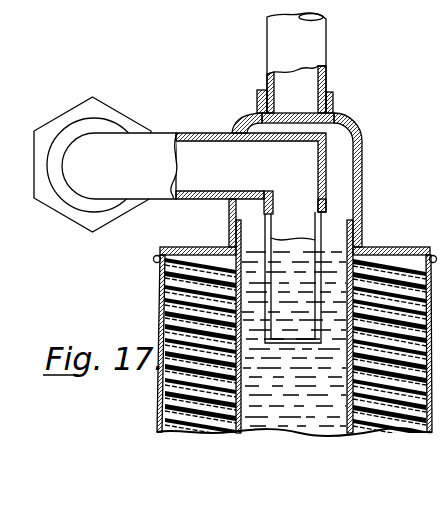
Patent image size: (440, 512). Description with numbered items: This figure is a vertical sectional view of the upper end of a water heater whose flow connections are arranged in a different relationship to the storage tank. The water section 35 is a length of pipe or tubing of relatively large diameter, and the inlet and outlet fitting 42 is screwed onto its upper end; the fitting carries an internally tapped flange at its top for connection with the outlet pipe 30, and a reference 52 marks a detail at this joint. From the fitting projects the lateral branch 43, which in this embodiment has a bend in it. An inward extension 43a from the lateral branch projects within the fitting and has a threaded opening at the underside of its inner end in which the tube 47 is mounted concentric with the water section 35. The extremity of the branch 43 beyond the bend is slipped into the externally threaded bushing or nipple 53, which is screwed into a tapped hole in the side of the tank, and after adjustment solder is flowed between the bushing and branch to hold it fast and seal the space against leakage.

The outlet pipe 30 is at (307, 50).
The water section 35 is at (357, 241).
The inlet and outlet fitting 42 is at (363, 134).
The lateral branch 43 is at (197, 133).
The inward extension 43a is at (262, 178).
The tube 47 is at (297, 223).
The collar 52 is at (295, 133).
The bushing or nipple 53 is at (122, 117).